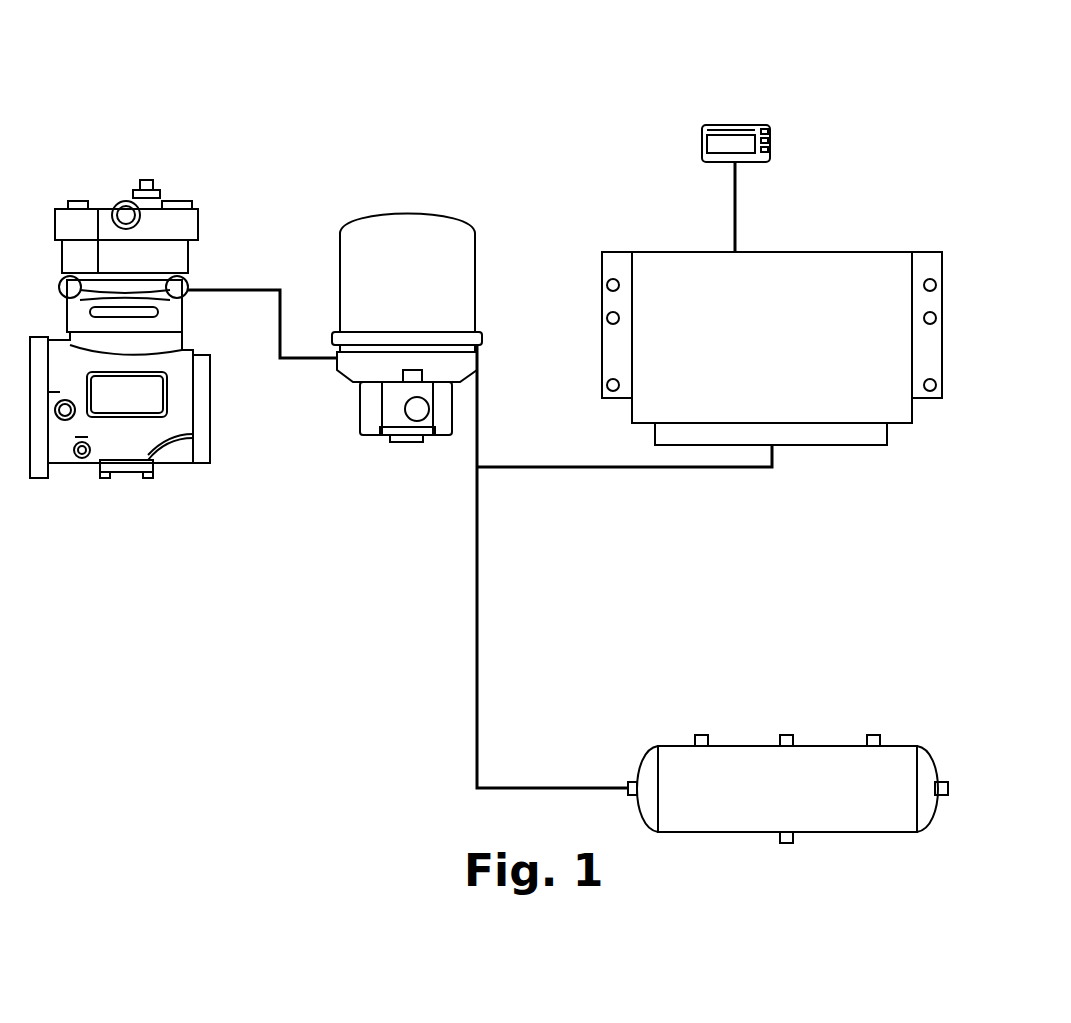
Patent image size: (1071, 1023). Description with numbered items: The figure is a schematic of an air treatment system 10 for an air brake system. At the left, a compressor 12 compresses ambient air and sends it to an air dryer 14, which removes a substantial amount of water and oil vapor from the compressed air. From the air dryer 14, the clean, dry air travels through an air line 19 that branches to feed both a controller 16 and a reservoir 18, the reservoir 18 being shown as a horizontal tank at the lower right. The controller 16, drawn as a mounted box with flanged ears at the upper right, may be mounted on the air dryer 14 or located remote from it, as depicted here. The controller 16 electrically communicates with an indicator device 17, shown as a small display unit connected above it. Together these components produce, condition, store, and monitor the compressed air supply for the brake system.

The air treatment system 10 is at (604, 106).
The compressor 12 is at (198, 223).
The air dryer 14 is at (475, 262).
The controller 16 is at (868, 252).
The indicator device 17 is at (773, 143).
The reservoir 18 is at (820, 742).
The air line 19 is at (480, 611).